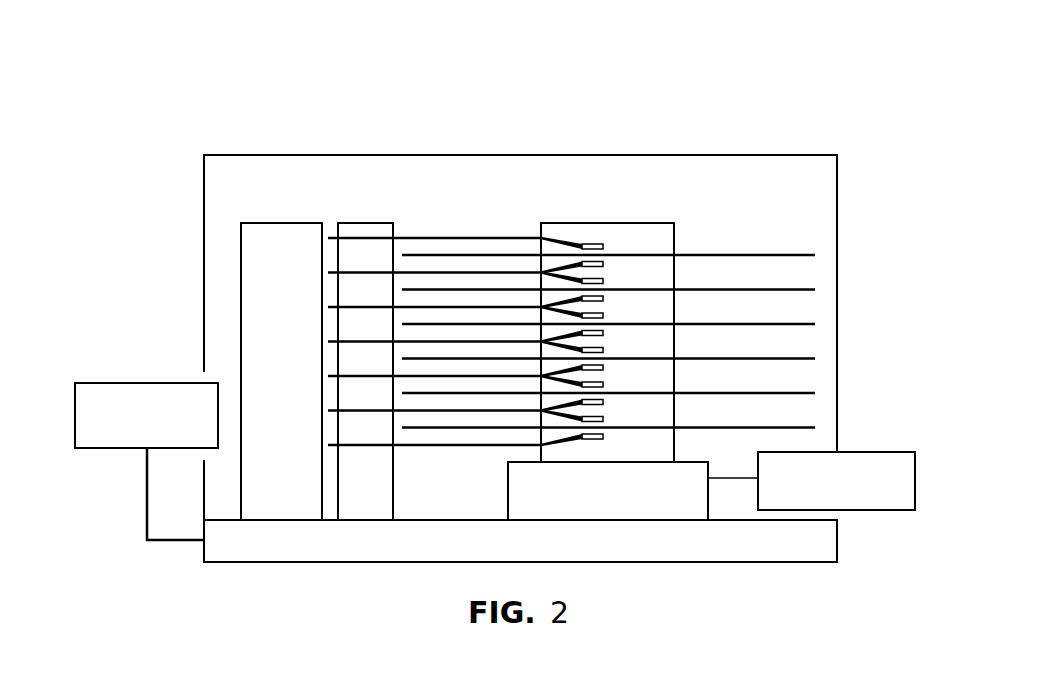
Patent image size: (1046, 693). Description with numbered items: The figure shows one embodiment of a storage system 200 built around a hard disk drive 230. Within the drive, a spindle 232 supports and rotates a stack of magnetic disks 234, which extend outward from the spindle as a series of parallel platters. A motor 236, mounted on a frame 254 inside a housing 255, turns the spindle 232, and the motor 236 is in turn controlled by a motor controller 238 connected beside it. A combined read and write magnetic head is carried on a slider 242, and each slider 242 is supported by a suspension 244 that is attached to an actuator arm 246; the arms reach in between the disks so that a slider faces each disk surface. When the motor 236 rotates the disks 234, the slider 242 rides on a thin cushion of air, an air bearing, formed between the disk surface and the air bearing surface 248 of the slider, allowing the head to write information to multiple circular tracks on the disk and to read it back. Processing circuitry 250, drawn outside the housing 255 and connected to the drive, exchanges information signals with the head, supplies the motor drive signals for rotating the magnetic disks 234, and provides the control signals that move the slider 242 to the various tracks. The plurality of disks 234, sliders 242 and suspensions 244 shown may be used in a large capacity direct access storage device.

The storage system 200 is at (172, 99).
The hard disk drive 230 is at (731, 220).
The spindle 232 is at (661, 223).
The magnetic disks 234 is at (815, 255).
The motor 236 is at (622, 505).
The motor controller 238 is at (873, 512).
The slider 242 is at (603, 264).
The suspension 244 is at (583, 280).
The actuator arm 246 is at (508, 272).
The air bearing surface 248 is at (598, 388).
The processing circuitry 250 is at (118, 383).
The frame 254 is at (257, 563).
The housing 255 is at (772, 155).